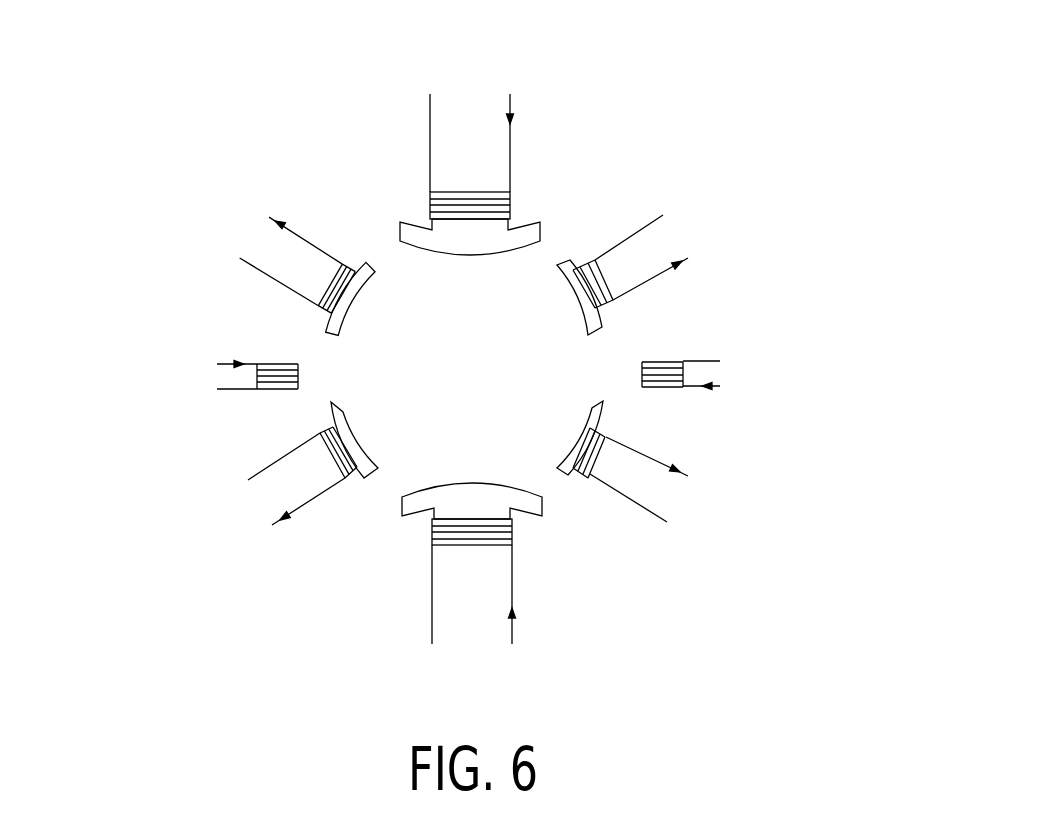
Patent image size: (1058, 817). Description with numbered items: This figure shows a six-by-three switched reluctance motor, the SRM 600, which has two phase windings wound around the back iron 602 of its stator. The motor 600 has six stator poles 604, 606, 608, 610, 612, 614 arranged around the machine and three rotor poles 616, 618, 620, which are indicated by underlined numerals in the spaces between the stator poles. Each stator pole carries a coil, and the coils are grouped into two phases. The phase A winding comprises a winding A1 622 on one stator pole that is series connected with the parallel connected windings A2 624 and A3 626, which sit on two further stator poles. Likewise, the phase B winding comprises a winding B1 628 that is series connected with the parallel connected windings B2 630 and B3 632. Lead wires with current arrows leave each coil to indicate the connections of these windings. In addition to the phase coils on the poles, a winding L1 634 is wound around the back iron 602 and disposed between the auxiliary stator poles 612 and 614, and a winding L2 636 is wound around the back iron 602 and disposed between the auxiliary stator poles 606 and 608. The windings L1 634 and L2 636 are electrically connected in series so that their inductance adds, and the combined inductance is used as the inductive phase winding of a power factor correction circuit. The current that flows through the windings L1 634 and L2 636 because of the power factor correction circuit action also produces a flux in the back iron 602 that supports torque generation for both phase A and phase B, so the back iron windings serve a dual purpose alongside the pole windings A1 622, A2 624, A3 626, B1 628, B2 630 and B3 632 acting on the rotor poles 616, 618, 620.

The 6/3 SRM 600 is at (468, 327).
The back iron 602 is at (476, 411).
The stator pole 604 is at (496, 243).
The auxiliary stator pole 606 is at (578, 330).
The auxiliary stator pole 608 is at (562, 473).
The stator pole 610 is at (447, 497).
The auxiliary stator pole 612 is at (353, 418).
The auxiliary stator pole 614 is at (374, 264).
The rotor pole 616 is at (486, 293).
The rotor pole 618 is at (558, 428).
The rotor pole 620 is at (418, 428).
The winding A1 622 is at (472, 156).
The winding A2 624 is at (292, 476).
The winding A3 626 is at (635, 463).
The winding B1 628 is at (474, 581).
The winding B2 630 is at (299, 263).
The winding B3 632 is at (630, 249).
The winding L1 634 is at (271, 420).
The winding L2 636 is at (664, 340).
The winding A1 is at (445, 149).
The winding A2 is at (333, 438).
The winding A3 is at (660, 422).
The winding B1 is at (496, 547).
The winding B2 is at (338, 270).
The winding B3 is at (612, 224).
The winding L1 is at (271, 380).
The winding L2 is at (664, 376).